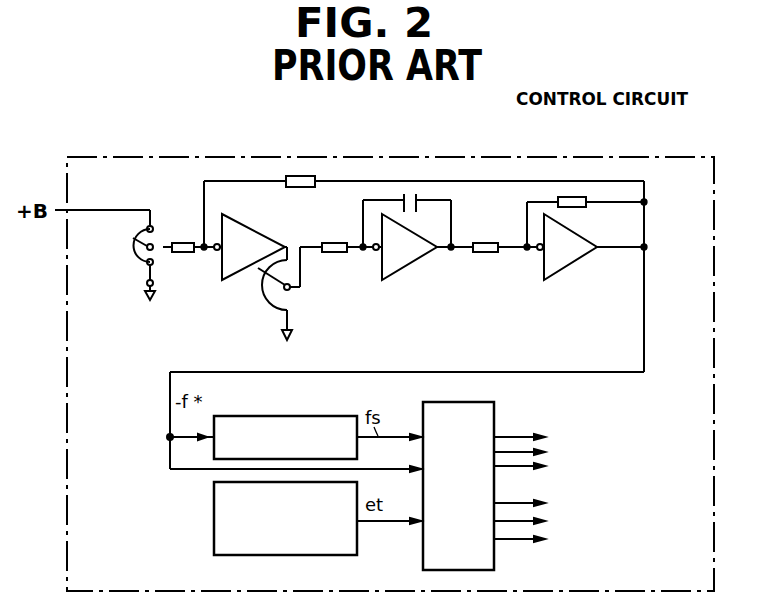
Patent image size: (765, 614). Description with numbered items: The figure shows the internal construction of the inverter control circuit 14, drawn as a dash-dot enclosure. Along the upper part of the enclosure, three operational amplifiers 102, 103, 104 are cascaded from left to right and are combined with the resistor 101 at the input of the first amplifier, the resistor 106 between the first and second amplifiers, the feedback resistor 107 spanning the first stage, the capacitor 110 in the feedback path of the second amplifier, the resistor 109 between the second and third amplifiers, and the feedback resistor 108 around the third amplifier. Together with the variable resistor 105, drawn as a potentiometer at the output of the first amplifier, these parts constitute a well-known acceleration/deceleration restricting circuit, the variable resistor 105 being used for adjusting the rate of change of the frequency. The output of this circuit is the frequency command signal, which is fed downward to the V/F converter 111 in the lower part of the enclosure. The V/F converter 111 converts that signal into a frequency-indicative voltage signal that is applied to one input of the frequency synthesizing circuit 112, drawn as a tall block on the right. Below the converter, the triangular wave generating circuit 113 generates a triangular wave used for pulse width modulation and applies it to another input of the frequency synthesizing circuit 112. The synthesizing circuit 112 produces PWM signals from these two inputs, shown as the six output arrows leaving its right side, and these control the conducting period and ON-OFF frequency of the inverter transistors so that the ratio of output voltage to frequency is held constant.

The inverter control circuit 14 is at (697, 137).
The resistor 101 is at (181, 242).
The operational amplifier 102 is at (262, 232).
The operational amplifier 103 is at (425, 257).
The operational amplifier 104 is at (566, 268).
The variable resistor 105 is at (262, 282).
The resistor 106 is at (337, 255).
The resistor 107 is at (303, 188).
The resistor 108 is at (573, 208).
The resistor 109 is at (487, 255).
The capacitor 110 is at (404, 191).
The V/F converter 111 is at (285, 415).
The frequency synthesizing circuit 112 is at (457, 398).
The triangular wave generating circuit 113 is at (283, 556).